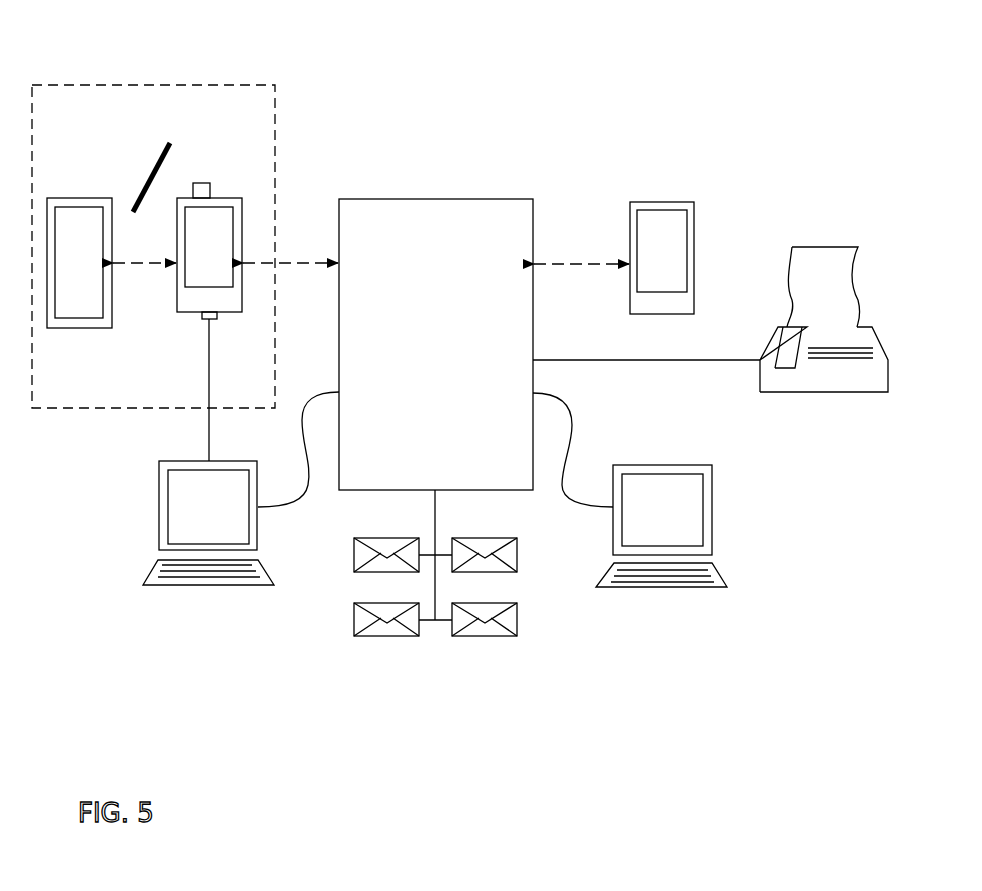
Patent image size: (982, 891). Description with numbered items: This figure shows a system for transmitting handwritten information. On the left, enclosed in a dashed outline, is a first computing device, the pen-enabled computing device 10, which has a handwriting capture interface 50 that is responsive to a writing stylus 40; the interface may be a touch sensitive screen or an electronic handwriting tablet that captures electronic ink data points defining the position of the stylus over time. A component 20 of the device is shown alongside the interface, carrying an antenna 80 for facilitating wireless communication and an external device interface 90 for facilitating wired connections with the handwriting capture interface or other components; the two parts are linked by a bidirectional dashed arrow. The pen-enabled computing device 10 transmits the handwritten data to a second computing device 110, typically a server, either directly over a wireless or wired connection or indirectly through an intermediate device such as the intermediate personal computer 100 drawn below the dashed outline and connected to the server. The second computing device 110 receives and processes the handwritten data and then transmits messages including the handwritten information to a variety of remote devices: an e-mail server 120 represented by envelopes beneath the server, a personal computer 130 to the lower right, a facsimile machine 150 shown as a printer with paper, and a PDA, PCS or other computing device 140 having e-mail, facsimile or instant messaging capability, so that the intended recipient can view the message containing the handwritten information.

The pen-enabled computing device 10 is at (160, 68).
The camera 20 is at (223, 198).
The writing stylus 40 is at (160, 155).
The handwriting capture interface 50 is at (88, 198).
The antenna 80 is at (208, 183).
The external device interface 90 is at (200, 316).
The intermediate personal computer 100 is at (223, 585).
The second computing device 110 is at (423, 199).
The e-mail server 120 is at (395, 636).
The personal computer 130 is at (702, 587).
The computing device 140 is at (678, 202).
The facsimile machine 150 is at (768, 343).